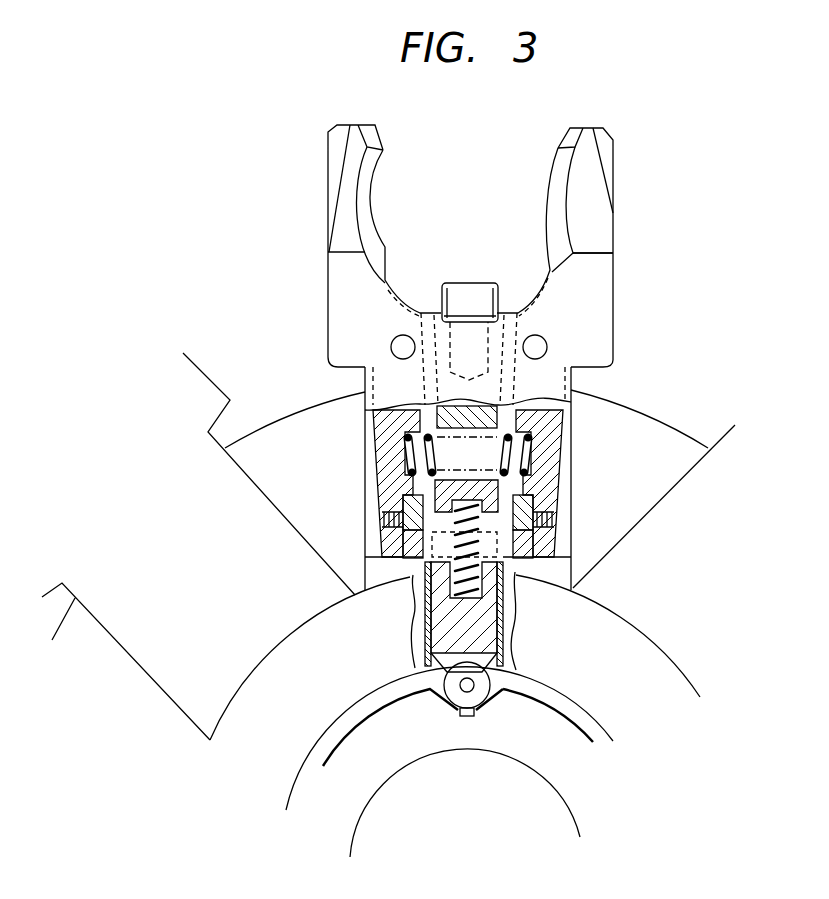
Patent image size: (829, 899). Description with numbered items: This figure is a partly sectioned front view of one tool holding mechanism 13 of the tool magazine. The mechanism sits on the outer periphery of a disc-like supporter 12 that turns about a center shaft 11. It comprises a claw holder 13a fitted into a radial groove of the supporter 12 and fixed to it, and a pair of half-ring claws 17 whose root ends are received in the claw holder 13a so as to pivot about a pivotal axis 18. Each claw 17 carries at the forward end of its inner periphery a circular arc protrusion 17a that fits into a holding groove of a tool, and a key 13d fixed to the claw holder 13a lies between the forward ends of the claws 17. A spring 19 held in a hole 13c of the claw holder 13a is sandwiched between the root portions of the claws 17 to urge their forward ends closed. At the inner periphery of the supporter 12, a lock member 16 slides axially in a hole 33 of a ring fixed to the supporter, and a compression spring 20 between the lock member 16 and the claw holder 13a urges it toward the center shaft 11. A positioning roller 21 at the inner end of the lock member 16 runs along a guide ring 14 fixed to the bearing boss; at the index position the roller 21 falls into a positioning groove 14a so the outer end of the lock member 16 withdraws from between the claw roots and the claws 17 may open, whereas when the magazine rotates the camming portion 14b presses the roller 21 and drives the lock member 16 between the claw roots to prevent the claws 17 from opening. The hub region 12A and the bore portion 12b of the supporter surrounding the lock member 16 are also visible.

The center shaft 11 is at (515, 777).
The disc-like supporter 12 is at (669, 424).
The hub of rotary body 12A is at (257, 655).
The bore 12b is at (583, 590).
The tool holding mechanism 13 is at (619, 318).
The claw holder 13a is at (594, 250).
The hole 13c is at (436, 456).
The key 13d is at (470, 282).
The guide ring 14 is at (371, 758).
The positioning groove 14a is at (441, 711).
The camming portion 14b is at (591, 740).
The lock member 16 is at (540, 511).
The claw 17 is at (336, 207).
The circular arc protrusion 17a is at (372, 197).
The pivotal axis 18 is at (391, 346).
The spring 19 is at (528, 452).
The compression spring 20 is at (486, 548).
The positioning roller 21 is at (480, 694).
The hole 33 is at (417, 624).